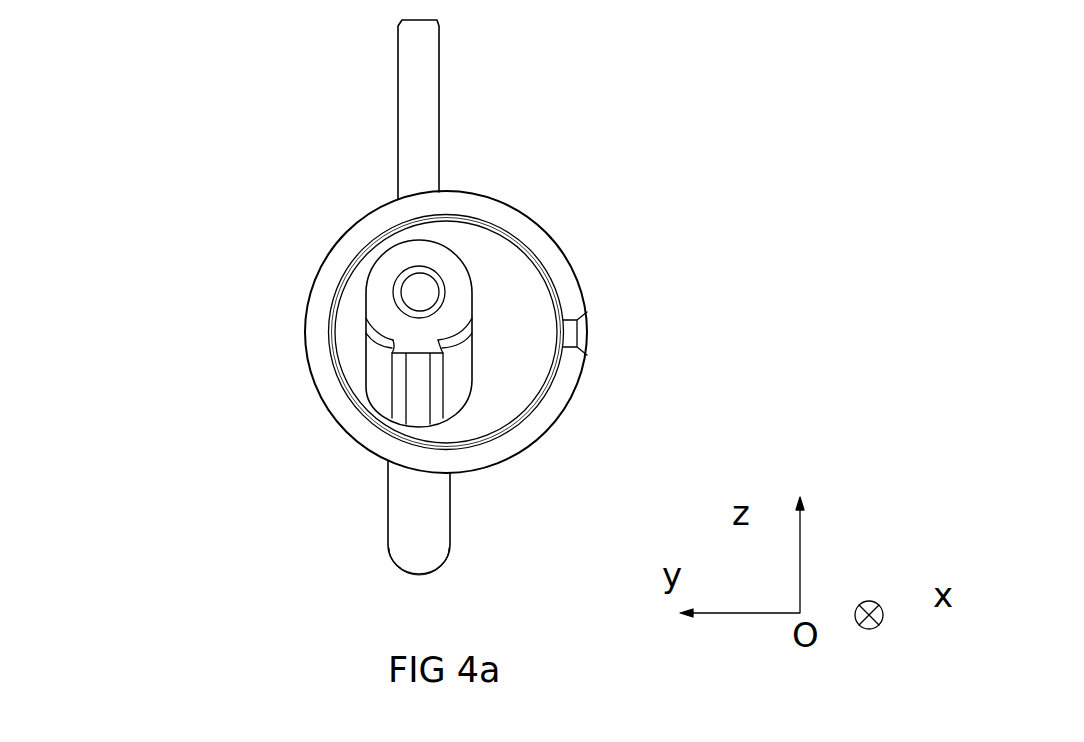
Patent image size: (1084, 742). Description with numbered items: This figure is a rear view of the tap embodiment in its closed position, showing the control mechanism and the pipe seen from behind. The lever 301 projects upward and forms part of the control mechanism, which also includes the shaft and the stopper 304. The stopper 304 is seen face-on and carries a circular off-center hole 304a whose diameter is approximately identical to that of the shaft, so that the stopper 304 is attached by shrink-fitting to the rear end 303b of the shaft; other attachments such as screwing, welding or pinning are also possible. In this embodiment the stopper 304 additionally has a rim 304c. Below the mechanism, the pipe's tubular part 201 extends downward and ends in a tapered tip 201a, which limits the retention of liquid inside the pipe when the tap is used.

The lever 301 is at (415, 108).
The tubular part 201 is at (408, 494).
The tapered tip 201a is at (420, 575).
The stopper 304 is at (378, 372).
The circular off-center hole 304a is at (405, 267).
The rear end of the shaft 303b is at (405, 298).
The rim 304c is at (405, 390).